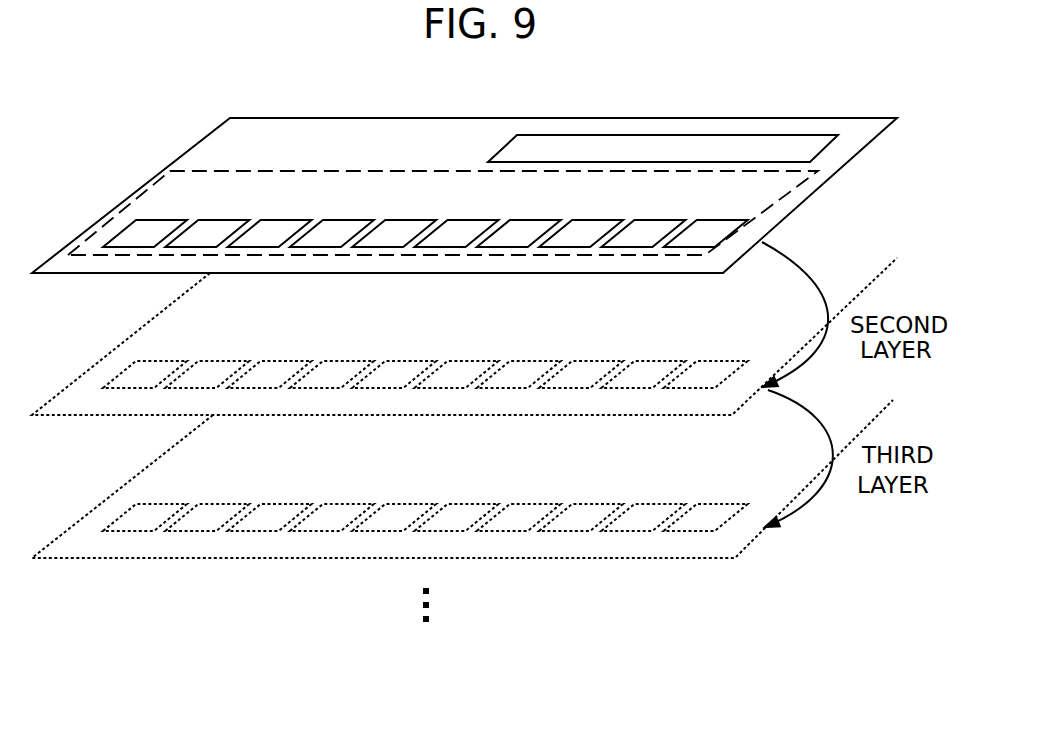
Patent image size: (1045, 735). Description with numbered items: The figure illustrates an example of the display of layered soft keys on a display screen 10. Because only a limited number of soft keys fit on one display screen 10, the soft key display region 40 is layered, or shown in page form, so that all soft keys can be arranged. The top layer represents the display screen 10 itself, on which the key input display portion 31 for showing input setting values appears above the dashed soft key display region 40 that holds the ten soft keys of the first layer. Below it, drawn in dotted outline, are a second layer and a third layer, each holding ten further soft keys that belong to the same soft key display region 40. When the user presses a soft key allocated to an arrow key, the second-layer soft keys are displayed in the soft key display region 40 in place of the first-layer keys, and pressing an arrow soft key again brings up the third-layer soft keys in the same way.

The display screen 10 is at (860, 152).
The key input display portion 31 is at (702, 133).
The soft key display region 40 is at (760, 224).